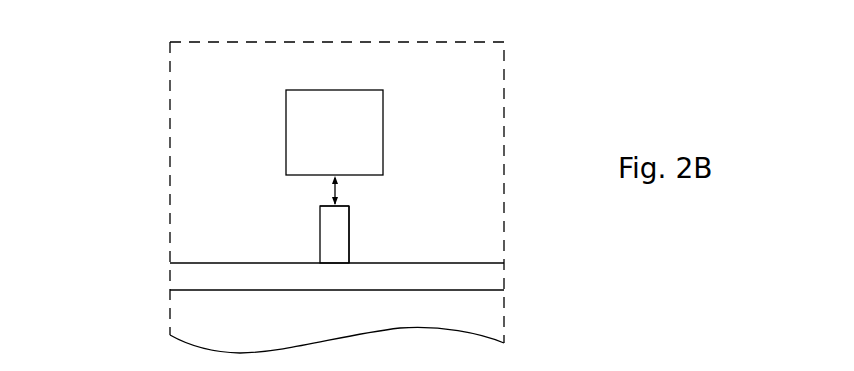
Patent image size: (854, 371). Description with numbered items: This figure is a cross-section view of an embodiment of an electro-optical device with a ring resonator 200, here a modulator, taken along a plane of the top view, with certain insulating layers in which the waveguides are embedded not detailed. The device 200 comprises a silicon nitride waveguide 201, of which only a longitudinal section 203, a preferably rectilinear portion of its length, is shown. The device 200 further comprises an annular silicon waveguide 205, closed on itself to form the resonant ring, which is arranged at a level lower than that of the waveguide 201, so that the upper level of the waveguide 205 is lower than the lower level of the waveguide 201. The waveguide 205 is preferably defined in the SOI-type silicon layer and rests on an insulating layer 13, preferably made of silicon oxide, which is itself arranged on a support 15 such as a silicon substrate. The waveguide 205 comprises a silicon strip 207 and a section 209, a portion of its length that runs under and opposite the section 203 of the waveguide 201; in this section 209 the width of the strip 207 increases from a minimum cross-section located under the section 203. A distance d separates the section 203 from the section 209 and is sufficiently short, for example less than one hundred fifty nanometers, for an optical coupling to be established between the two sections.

The ring resonator electro-optical device 200 is at (170, 80).
The silicon nitride waveguide 201 is at (293, 132).
The longitudinal section of waveguide 201 203 is at (334, 132).
The annular silicon waveguide 205 is at (312, 231).
The silicon strip 207 is at (342, 222).
The section of waveguide 205 209 is at (349, 242).
The distance d is at (335, 190).
The insulating layer 13 is at (488, 273).
The support 15 is at (488, 318).